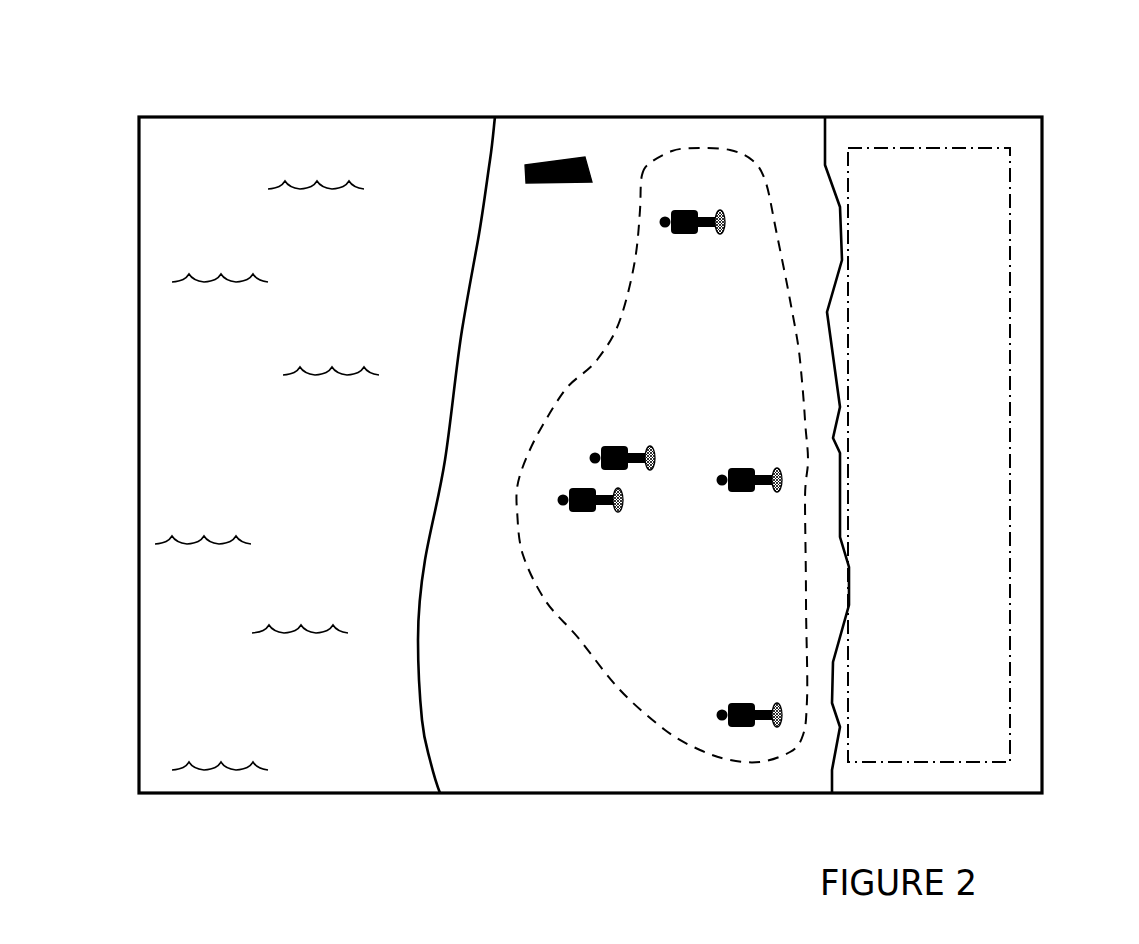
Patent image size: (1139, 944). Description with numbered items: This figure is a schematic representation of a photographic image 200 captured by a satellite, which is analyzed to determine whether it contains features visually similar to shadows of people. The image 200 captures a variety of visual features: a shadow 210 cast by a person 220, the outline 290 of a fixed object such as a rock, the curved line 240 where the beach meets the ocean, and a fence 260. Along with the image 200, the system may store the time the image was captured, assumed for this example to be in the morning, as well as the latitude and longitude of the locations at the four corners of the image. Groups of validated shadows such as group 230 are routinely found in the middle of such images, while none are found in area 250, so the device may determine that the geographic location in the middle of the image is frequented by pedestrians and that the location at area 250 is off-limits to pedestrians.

The photographic image 200 is at (139, 138).
The shadow 210 is at (708, 385).
The person 220 is at (723, 212).
The group of validated shadows 230 is at (672, 738).
The curved line 240 is at (435, 773).
The area 250 is at (1010, 168).
The fence 260 is at (826, 138).
The outline of a fixed object 290 is at (549, 158).